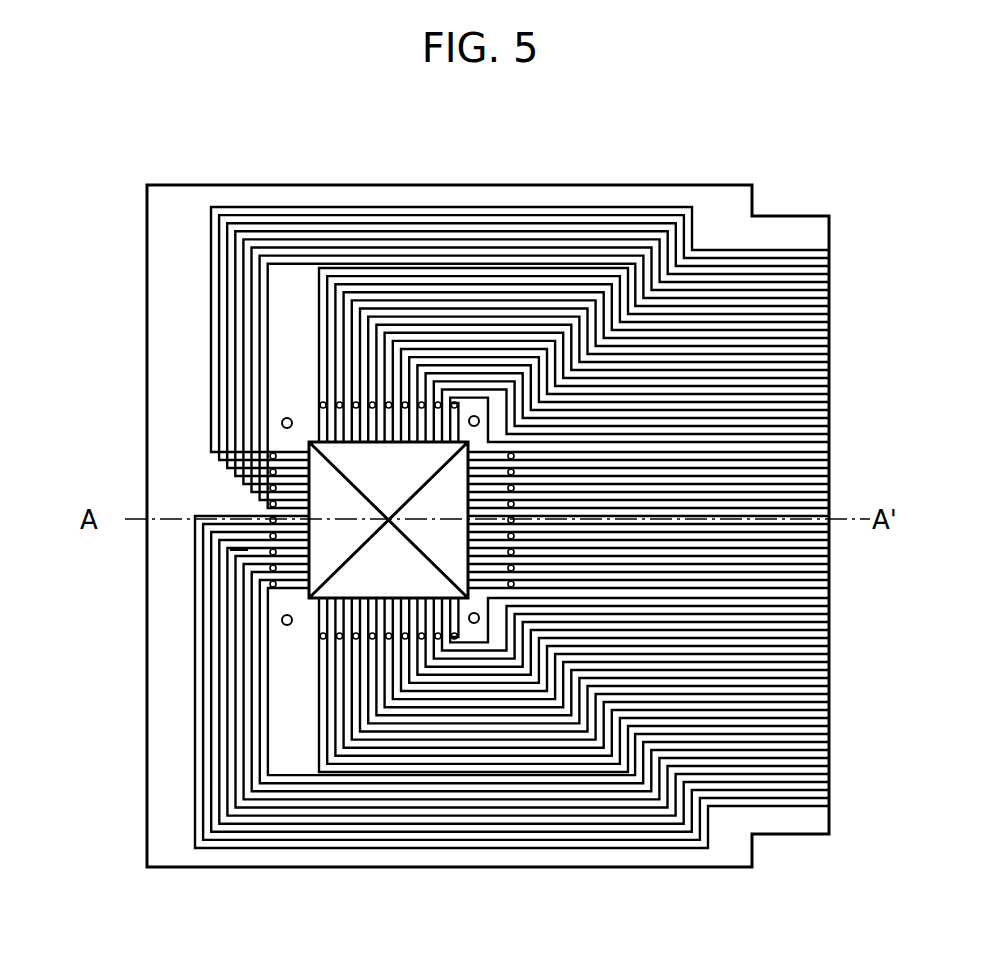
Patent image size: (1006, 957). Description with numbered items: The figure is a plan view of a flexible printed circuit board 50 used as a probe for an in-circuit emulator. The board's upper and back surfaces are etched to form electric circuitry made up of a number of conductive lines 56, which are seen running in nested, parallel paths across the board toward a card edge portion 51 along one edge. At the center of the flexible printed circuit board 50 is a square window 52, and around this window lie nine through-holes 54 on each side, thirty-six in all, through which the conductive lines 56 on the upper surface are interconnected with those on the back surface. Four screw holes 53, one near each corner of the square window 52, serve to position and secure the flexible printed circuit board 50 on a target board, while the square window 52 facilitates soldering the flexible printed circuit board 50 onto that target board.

The flexible printed circuit board 50 is at (165, 243).
The card edge portion 51 is at (930, 840).
The square window 52 is at (340, 587).
The screw holes 53 is at (282, 423).
The through-holes 54 is at (230, 549).
The conductive lines 56 is at (213, 295).